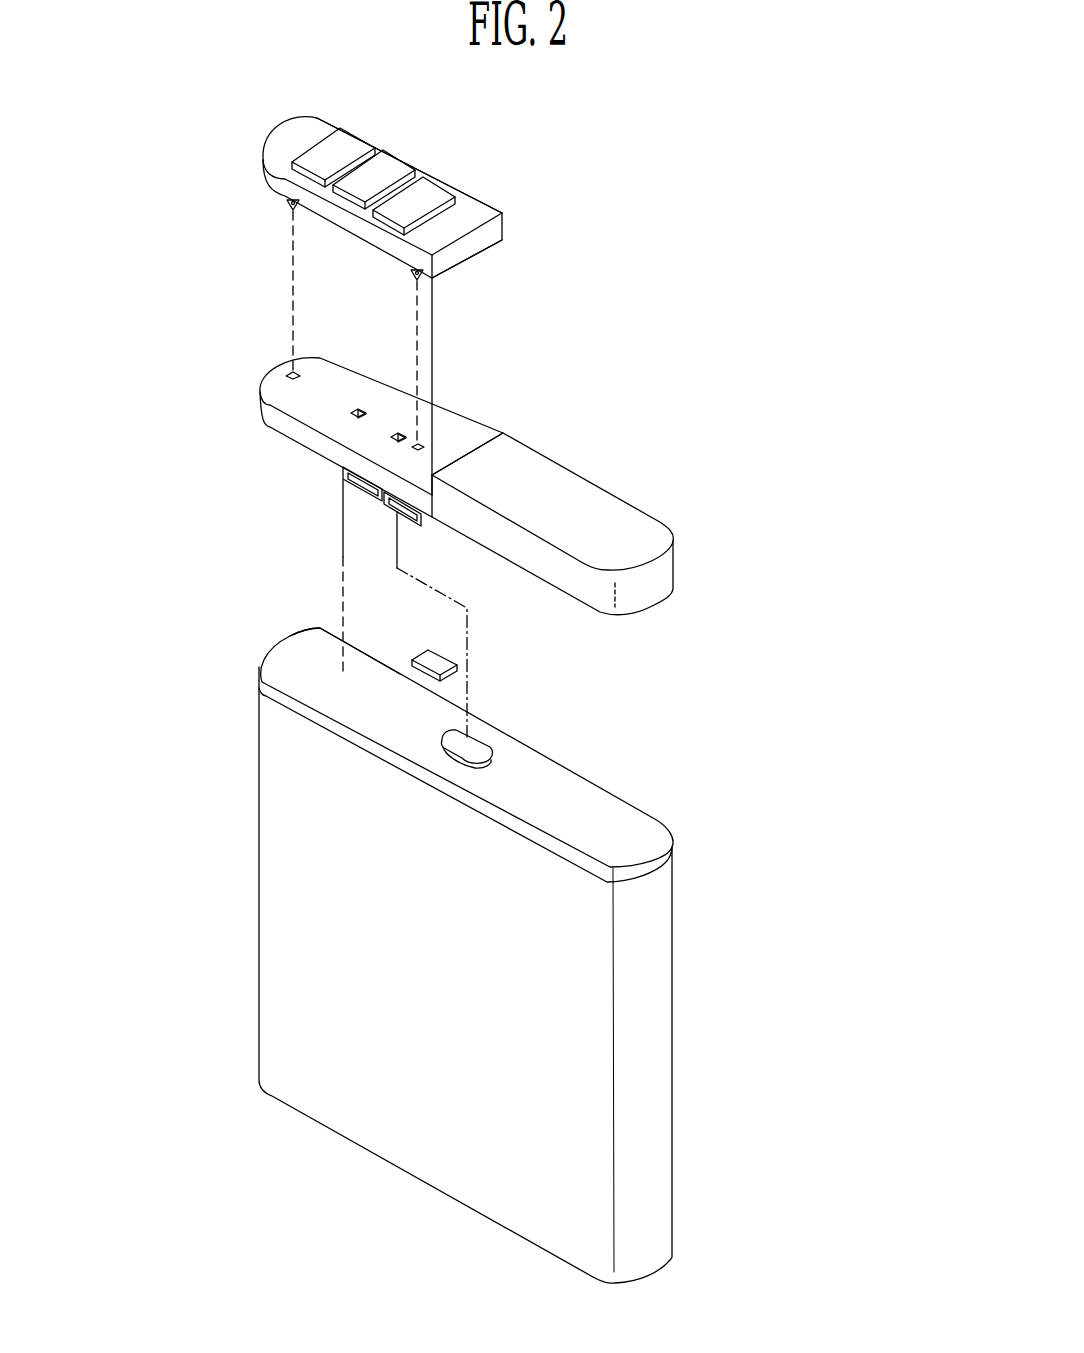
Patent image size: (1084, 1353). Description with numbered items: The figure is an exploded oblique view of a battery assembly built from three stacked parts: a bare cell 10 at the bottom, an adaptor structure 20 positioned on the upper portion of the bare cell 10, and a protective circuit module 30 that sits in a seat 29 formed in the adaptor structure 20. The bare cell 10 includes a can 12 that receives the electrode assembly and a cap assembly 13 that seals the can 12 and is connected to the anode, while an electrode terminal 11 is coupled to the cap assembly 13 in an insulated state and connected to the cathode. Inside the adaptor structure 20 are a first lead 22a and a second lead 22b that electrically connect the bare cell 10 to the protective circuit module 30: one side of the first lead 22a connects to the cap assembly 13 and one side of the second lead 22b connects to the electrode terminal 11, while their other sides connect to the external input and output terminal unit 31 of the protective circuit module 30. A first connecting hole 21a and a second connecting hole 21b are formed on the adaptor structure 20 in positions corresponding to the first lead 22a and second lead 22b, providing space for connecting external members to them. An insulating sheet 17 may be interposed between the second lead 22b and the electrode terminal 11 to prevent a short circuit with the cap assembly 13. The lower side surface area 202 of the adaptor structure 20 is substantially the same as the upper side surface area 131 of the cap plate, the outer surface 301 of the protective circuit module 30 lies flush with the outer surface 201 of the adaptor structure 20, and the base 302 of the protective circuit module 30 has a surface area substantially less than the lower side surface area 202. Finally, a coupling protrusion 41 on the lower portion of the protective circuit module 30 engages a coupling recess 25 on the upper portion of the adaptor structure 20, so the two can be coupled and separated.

The bare cell 10 is at (510, 924).
The electrode terminal 11 is at (483, 747).
The can 12 is at (782, 740).
The cap assembly 13 is at (485, 724).
The upper side surface area 131 is at (297, 653).
The insulating sheet 17 is at (425, 653).
The adaptor structure 20 is at (453, 522).
The outer surface 201 is at (630, 520).
The lower side surface area 202 is at (522, 573).
The first connecting hole 21a is at (359, 408).
The second connecting hole 21b is at (398, 433).
The first lead 22a is at (356, 414).
The second lead 22b is at (396, 438).
The coupling recess 25 is at (291, 375).
The seat 29 is at (442, 437).
The protective circuit module 30 is at (412, 270).
The outer surface 301 is at (380, 152).
The base 302 is at (483, 262).
The external input and output terminal unit 31 is at (348, 150).
The coupling protrusion 41 is at (290, 205).